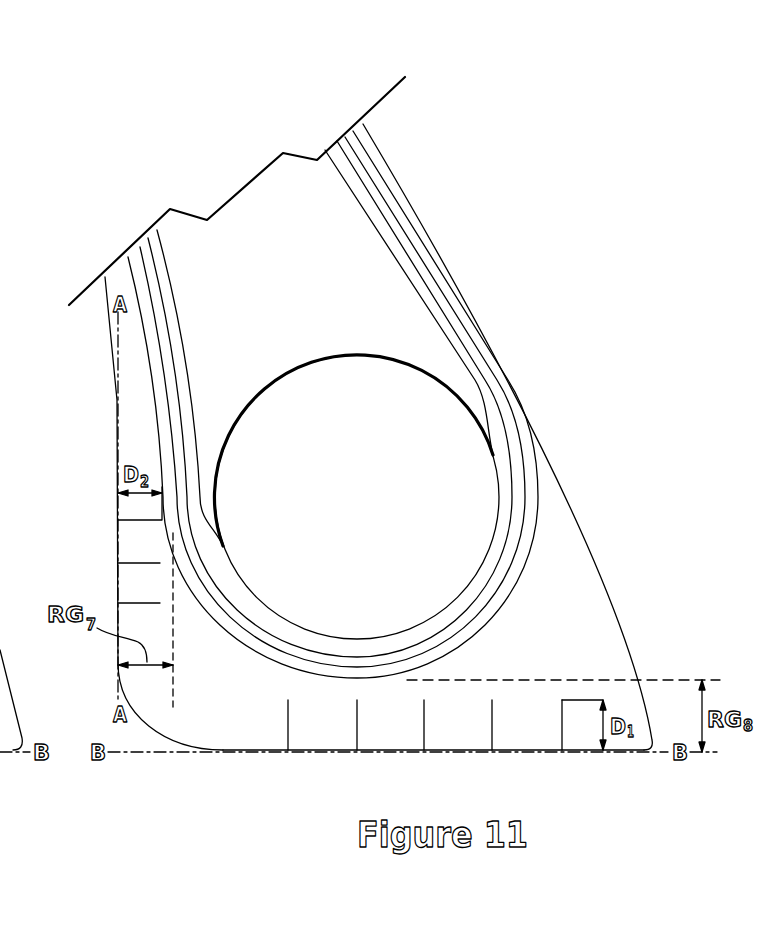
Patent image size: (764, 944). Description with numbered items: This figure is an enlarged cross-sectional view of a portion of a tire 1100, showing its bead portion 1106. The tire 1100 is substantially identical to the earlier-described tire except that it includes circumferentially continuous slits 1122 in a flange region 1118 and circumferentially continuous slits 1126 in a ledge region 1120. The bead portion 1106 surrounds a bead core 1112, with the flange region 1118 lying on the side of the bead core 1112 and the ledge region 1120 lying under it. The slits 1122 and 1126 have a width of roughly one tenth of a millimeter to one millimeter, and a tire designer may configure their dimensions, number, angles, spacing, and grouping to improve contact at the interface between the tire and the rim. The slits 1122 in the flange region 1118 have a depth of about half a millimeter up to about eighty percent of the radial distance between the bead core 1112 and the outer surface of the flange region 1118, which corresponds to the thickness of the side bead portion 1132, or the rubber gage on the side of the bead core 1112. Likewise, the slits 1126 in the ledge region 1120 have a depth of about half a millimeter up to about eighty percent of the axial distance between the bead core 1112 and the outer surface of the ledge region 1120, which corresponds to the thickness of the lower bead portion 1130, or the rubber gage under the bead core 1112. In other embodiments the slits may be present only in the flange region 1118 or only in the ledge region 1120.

The tire 1100 is at (458, 217).
The bead portion 1106 is at (487, 267).
The bead core 1112 is at (425, 468).
The flange region 1118 is at (90, 448).
The ledge region 1120 is at (478, 771).
The circumferentially continuous slits 1122 is at (137, 560).
The circumferentially continuous slits 1126 is at (355, 722).
The lower bead portion 1130 is at (407, 692).
The side bead portion 1132 is at (185, 582).